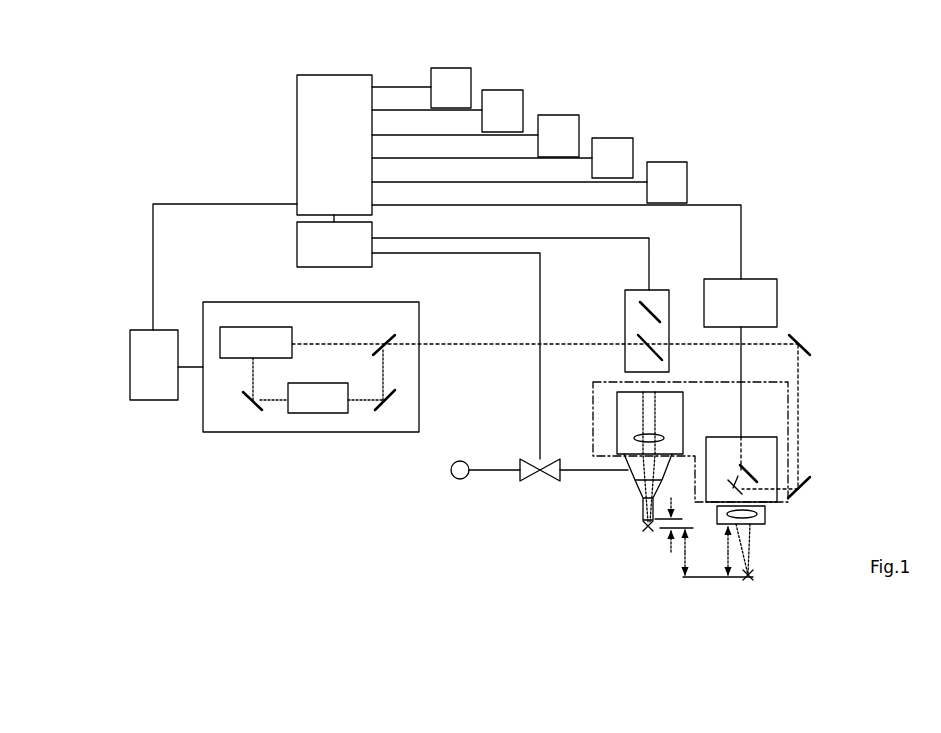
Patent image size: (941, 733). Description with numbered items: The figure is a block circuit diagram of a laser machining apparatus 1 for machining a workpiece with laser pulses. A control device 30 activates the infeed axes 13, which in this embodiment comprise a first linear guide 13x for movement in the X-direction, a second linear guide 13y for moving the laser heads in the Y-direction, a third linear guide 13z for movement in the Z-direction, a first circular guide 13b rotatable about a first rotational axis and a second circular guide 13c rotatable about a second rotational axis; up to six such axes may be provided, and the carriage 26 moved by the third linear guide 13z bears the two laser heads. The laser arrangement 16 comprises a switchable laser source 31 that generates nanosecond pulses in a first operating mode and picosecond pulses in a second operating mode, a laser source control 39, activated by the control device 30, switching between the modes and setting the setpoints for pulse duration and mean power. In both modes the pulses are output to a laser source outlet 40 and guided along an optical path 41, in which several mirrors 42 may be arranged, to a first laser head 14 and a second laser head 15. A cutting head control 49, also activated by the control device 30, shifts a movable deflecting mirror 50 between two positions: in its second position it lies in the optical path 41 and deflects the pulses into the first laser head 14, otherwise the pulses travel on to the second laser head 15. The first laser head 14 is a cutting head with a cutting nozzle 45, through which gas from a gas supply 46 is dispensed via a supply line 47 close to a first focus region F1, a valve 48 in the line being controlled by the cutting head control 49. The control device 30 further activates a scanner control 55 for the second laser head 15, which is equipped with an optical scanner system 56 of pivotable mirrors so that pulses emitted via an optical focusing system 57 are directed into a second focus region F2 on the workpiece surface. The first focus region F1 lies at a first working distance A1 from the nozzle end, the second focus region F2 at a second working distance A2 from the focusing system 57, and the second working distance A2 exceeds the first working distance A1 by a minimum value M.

The laser processing apparatus 1 is at (832, 137).
The infeed axes 13 is at (582, 111).
The first linear guide 13x is at (451, 68).
The second linear guide 13y is at (502, 90).
The third linear guide 13z is at (557, 115).
The first circular guide 13b is at (612, 137).
The second circular guide 13c is at (665, 162).
The control device 30 is at (297, 142).
The cutting head control 49 is at (297, 245).
The laser source control 39 is at (130, 385).
The laser source outlet 40 is at (420, 342).
The optical path 41 is at (470, 352).
The laser source 31 is at (253, 433).
The laser arrangement 16 is at (376, 481).
The gas supply 46 is at (450, 475).
The supply line 47 is at (497, 468).
The valve 48 is at (543, 480).
The deflecting mirror 50 is at (653, 300).
The scanner control 55 is at (767, 275).
The mirrors 42 is at (797, 337).
The carriage 26 is at (767, 378).
The first laser head 14 is at (627, 461).
The cutting nozzle 45 is at (640, 505).
The second laser head 15 is at (794, 450).
The optical scanner system 56 is at (762, 459).
The optical focusing system 57 is at (767, 518).
The first focus region F1 is at (646, 529).
The second focus region F2 is at (755, 575).
The first working distance A1 is at (675, 516).
The second working distance A2 is at (726, 553).
The minimum value M is at (685, 555).